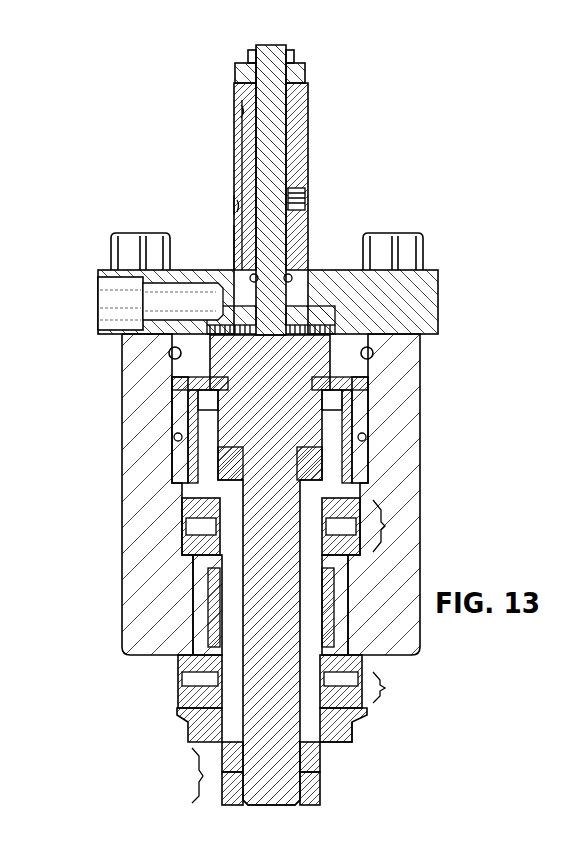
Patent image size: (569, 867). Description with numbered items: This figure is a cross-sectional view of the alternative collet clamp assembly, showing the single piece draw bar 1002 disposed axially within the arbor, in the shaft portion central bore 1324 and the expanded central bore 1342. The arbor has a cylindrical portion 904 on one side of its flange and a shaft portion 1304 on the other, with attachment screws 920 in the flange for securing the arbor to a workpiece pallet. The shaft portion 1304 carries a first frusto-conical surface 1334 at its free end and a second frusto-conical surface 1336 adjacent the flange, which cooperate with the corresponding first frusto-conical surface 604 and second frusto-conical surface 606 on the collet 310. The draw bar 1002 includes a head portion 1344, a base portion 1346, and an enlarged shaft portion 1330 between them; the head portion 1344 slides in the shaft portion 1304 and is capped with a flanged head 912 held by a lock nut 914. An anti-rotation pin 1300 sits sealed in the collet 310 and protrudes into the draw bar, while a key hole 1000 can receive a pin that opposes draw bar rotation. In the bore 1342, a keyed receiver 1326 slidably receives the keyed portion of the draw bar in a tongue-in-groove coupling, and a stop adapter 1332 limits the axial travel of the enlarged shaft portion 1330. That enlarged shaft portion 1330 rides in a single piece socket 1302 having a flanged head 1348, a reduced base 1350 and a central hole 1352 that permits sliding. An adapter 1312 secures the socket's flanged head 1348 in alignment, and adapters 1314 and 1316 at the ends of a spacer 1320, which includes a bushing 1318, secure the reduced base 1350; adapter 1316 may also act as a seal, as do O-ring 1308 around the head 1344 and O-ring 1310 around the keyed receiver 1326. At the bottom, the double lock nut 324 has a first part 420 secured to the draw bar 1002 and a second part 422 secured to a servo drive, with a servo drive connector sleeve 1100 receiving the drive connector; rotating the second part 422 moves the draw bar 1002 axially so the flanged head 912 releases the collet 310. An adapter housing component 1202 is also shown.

The collet 310 is at (305, 130).
The double lock nut 324 is at (195, 777).
The first part of double lock nut 420 is at (315, 758).
The second part of double lock nut 422 is at (318, 785).
The first frusto-conical surface 604 is at (236, 205).
The second frusto-conical surface 606 is at (236, 95).
The cylindrical portion 904 is at (425, 445).
The flanged head 912 is at (302, 72).
The lock nut 914 is at (294, 52).
The attachment screws 920 is at (135, 238).
The key hole 1000 is at (96, 290).
The single piece draw bar 1002 is at (257, 604).
The servo drive connector sleeve 1100 is at (355, 745).
The flared ring 1202 is at (360, 727).
The anti-rotation pin 1300 is at (306, 203).
The single piece socket 1302 is at (180, 690).
The shaft portion 1304 is at (240, 170).
The O-ring 1308 is at (297, 272).
The O-ring 1310 is at (398, 362).
The adapter 1312 is at (370, 402).
The adapter 1314 is at (386, 526).
The adapter 1316 is at (386, 688).
The bushing 1318 is at (345, 645).
The spacer 1320 is at (365, 665).
The shaft portion central bore 1324 is at (245, 262).
The keyed receiver 1326 is at (310, 314).
The enlarged shaft portion 1330 is at (170, 352).
The stop adapter 1332 is at (368, 385).
The first frusto-conical surface 1334 is at (236, 235).
The second frusto-conical surface 1336 is at (242, 110).
The expanded central bore 1342 is at (190, 497).
The head portion 1344 is at (280, 150).
The base portion 1346 is at (285, 800).
The flanged head 1348 is at (200, 405).
The reduced base 1350 is at (200, 735).
The hole 1352 is at (200, 368).